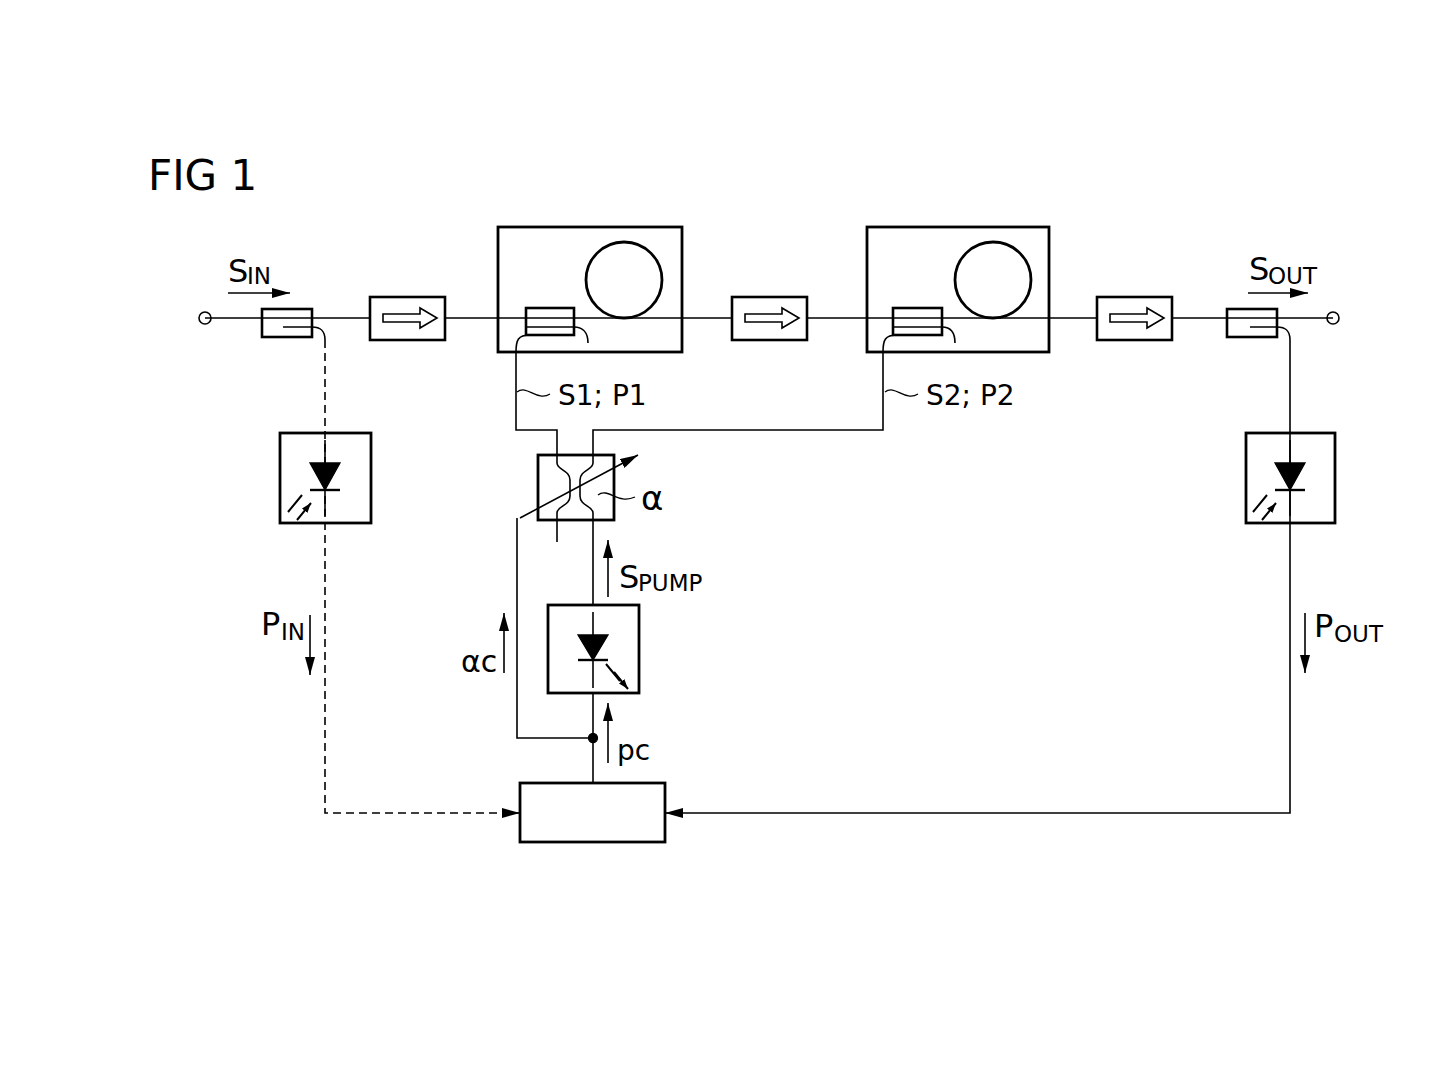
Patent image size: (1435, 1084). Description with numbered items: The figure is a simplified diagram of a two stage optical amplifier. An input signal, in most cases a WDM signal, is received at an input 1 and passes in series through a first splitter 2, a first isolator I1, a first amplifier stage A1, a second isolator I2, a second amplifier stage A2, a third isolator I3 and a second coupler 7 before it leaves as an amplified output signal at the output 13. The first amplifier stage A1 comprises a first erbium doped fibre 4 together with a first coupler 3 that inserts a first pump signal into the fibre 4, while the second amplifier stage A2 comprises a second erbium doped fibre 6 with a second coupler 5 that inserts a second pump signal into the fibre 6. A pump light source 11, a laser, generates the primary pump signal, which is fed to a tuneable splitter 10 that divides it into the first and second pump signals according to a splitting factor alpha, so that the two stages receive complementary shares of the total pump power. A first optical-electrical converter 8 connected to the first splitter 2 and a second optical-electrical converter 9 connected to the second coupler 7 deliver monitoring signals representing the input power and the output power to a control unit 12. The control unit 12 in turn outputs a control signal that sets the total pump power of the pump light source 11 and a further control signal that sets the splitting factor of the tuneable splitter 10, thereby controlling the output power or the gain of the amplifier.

The input 1 is at (199, 318).
The first splitter 2 is at (285, 338).
The first coupler 3 is at (546, 308).
The erbium doped fibre 4 is at (624, 243).
The second coupler 5 is at (913, 308).
The erbium doped fibre 6 is at (993, 243).
The second coupler 7 is at (1239, 340).
The first optical-electrical converter 8 is at (371, 478).
The second optical-electrical converter 9 is at (1335, 478).
The tuneable splitter 10 is at (538, 487).
The pump light source 11 is at (639, 648).
The control unit 12 is at (594, 842).
The output 13 is at (1340, 318).
The first amplifier stage A1 is at (590, 256).
The second amplifier stage A2 is at (958, 256).
The first isolator I1 is at (403, 297).
The second isolator I2 is at (768, 297).
The third isolator I3 is at (1133, 297).